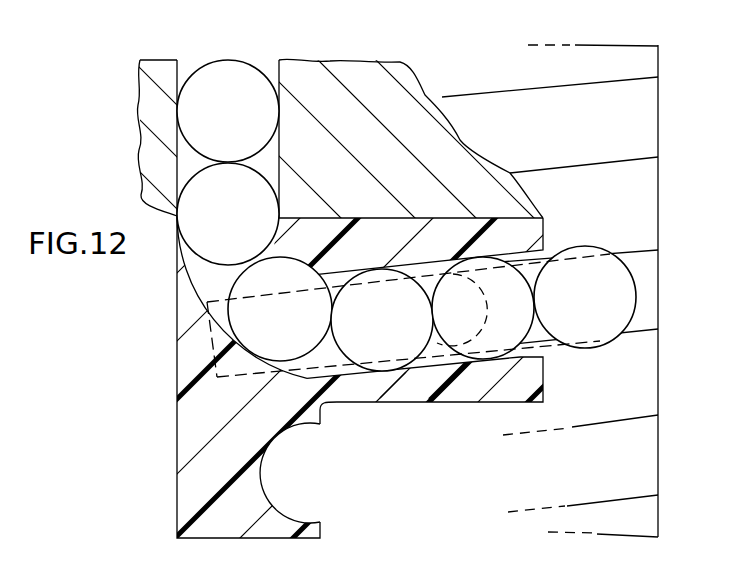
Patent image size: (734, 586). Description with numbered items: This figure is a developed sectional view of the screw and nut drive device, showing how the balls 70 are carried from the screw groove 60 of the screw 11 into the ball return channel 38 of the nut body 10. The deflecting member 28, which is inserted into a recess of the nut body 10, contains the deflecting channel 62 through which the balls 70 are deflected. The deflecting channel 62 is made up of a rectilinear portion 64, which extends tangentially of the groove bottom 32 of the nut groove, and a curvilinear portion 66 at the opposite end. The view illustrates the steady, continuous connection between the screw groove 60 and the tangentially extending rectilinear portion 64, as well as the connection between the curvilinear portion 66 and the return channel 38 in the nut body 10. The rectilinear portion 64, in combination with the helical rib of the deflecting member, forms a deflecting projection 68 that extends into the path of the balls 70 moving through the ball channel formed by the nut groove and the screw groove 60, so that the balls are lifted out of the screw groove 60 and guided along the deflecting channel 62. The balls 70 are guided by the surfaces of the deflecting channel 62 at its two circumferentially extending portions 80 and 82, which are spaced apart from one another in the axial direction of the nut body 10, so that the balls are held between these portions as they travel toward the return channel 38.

The nut body 10 is at (143, 134).
The screw 11 is at (600, 62).
The deflecting member 28 is at (174, 436).
The groove bottom 32 is at (283, 472).
The ball return channel 38 is at (185, 62).
The screw groove 60 is at (623, 140).
The deflecting channel 62 is at (325, 380).
The rectilinear portion 64 is at (433, 368).
The curvilinear portion 66 is at (198, 282).
The deflecting projection 68 is at (502, 314).
The balls 70 is at (241, 92).
The circumferentially extending portion 80 is at (428, 262).
The circumferentially extending portion 82 is at (412, 370).